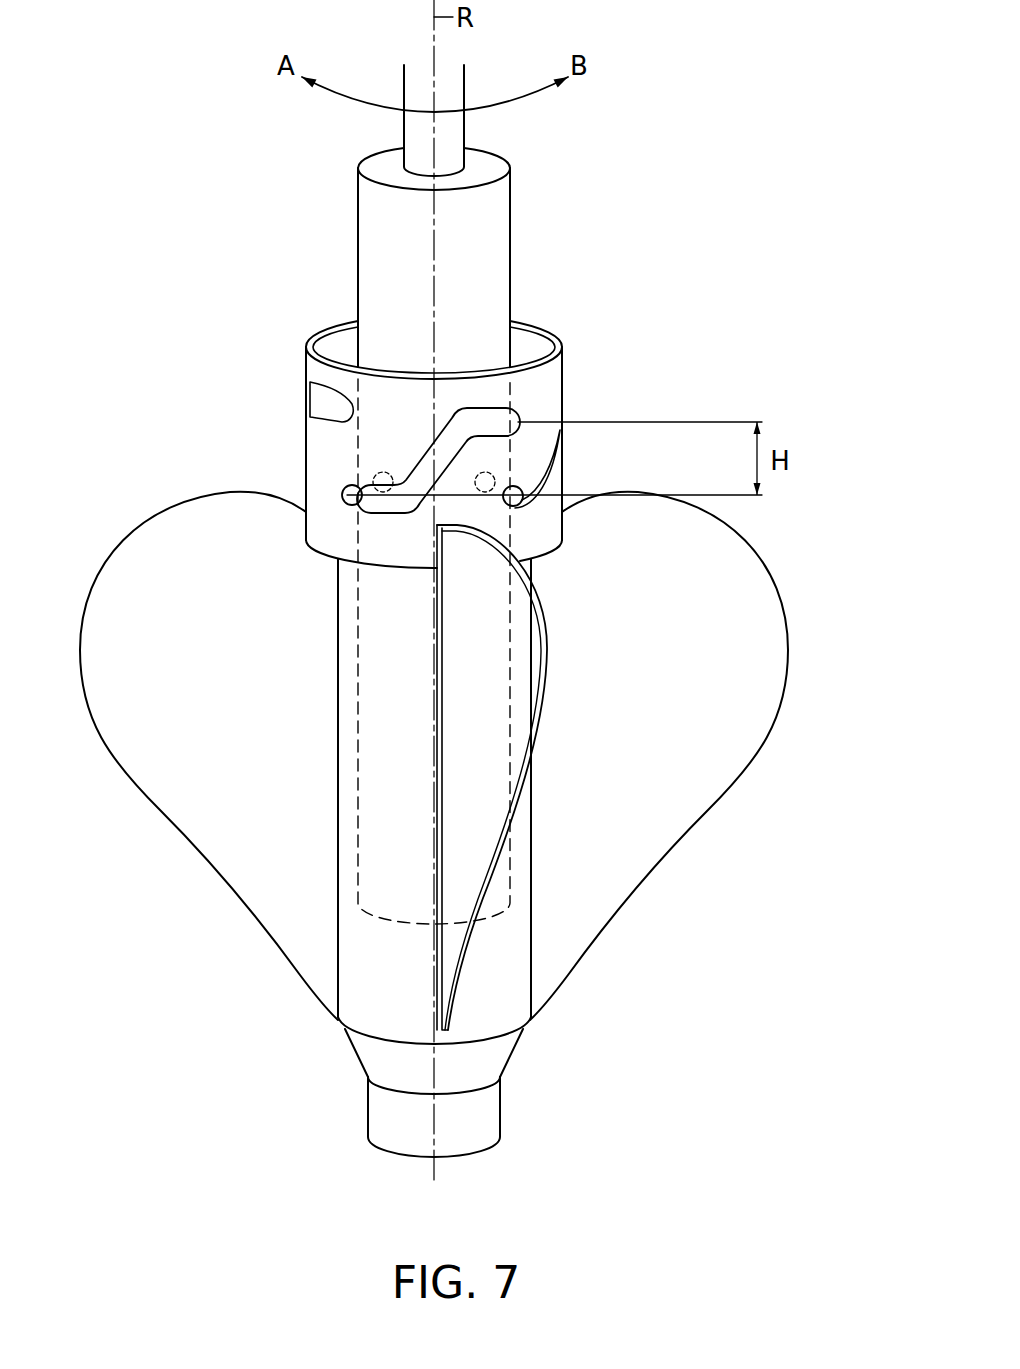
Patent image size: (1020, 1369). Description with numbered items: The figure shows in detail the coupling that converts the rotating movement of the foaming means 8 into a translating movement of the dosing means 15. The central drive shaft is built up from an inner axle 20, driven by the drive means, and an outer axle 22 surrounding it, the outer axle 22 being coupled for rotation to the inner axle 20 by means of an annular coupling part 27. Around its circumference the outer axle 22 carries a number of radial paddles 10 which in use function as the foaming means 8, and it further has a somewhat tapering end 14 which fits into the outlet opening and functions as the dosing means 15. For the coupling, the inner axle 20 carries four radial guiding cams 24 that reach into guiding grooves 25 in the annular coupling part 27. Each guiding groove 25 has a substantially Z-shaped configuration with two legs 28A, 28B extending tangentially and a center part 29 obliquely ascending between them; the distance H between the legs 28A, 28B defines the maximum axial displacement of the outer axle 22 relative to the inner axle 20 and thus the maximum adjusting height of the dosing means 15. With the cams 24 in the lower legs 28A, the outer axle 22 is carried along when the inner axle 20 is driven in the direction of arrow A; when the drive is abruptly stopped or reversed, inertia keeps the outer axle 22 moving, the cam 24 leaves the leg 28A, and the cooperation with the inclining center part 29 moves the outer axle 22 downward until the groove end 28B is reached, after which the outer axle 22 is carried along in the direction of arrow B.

The foaming means 8 is at (471, 756).
The radial paddles 10 is at (718, 635).
The tapering end 14 is at (477, 1127).
The dosing means 15 is at (528, 1120).
The inner axle 20 is at (482, 246).
The outer axle 22 is at (490, 988).
The radial guiding cam 24 is at (520, 490).
The guiding groove 25 is at (387, 463).
The annular coupling part 27 is at (543, 377).
The lower leg 28A is at (347, 492).
The other groove end 28B is at (517, 417).
The center part 29 is at (423, 465).